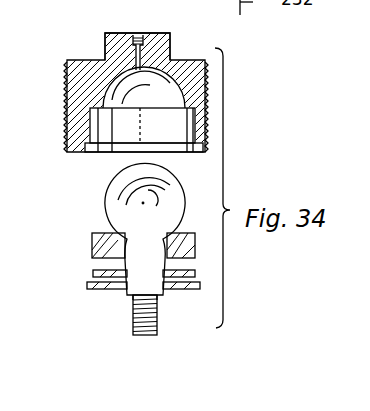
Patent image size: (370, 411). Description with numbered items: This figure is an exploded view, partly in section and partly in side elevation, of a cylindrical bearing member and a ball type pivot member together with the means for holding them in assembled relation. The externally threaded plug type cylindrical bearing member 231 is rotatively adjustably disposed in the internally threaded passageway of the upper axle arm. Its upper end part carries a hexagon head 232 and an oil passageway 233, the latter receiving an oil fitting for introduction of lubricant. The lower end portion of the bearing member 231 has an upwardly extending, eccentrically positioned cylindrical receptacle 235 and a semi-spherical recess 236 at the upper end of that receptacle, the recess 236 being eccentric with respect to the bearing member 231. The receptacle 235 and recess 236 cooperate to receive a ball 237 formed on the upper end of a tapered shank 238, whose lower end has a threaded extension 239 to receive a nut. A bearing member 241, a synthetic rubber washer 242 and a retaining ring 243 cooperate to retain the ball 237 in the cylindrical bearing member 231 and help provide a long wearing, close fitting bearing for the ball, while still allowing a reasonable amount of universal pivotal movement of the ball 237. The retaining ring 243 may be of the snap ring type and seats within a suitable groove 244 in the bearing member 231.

The cylindrical bearing member 231 is at (86, 62).
The hexagon head 232 is at (110, 36).
The oil passageway 233 is at (138, 33).
The cylindrical receptacle 235 is at (107, 124).
The semi-spherical recess 236 is at (132, 100).
The ball 237 is at (110, 200).
The tapered shank 238 is at (140, 293).
The threaded extension 239 is at (135, 316).
The bearing member 241 is at (95, 238).
The synthetic rubber washer 242 is at (96, 272).
The retaining ring 243 is at (88, 286).
The groove 244 is at (98, 149).